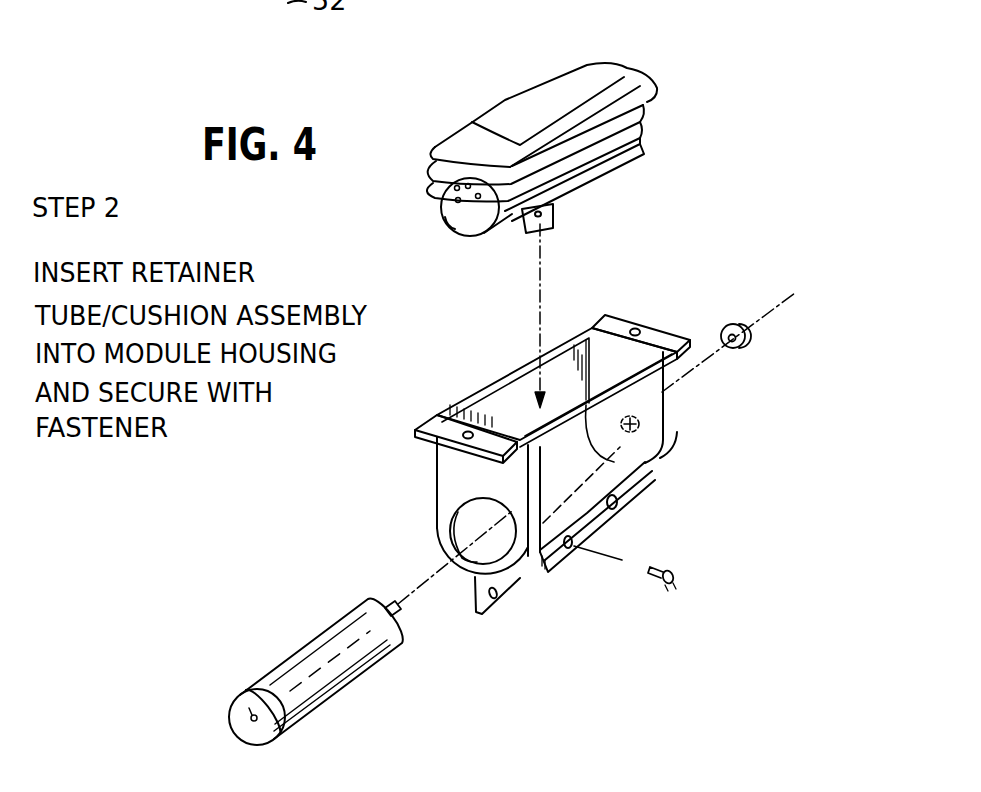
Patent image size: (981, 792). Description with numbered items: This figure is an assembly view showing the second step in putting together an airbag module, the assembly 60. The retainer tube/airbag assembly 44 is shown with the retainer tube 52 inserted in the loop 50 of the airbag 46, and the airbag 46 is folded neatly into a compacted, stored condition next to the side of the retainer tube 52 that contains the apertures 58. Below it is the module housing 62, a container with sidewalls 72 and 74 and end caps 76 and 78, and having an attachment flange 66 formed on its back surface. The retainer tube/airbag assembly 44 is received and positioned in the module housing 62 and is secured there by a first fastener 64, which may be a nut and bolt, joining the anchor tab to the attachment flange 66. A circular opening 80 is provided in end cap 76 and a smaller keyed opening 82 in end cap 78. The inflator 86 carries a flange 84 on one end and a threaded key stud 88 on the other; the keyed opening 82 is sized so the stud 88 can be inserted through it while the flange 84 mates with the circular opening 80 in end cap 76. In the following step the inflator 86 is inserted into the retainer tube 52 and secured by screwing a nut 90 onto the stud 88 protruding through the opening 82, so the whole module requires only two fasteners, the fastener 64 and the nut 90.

The retainer tube/airbag assembly 44 is at (405, 205).
The airbag 46 is at (623, 78).
The loop 50 is at (497, 230).
The retainer tube 52 is at (453, 233).
The apertures 58 is at (460, 200).
The assembly 60 is at (379, 432).
The module housing 62 is at (647, 480).
The first fastener 64 is at (677, 574).
The attachment flange 66 is at (518, 580).
The sidewall 72 is at (437, 463).
The sidewall 74 is at (662, 400).
The end cap 76 is at (457, 487).
The end cap 78 is at (653, 343).
The circular opening 80 is at (466, 549).
The keyed opening 82 is at (642, 425).
The flange 84 is at (249, 688).
The inflator 86 is at (307, 683).
The threaded key stud 88 is at (400, 613).
The nut 90 is at (755, 338).